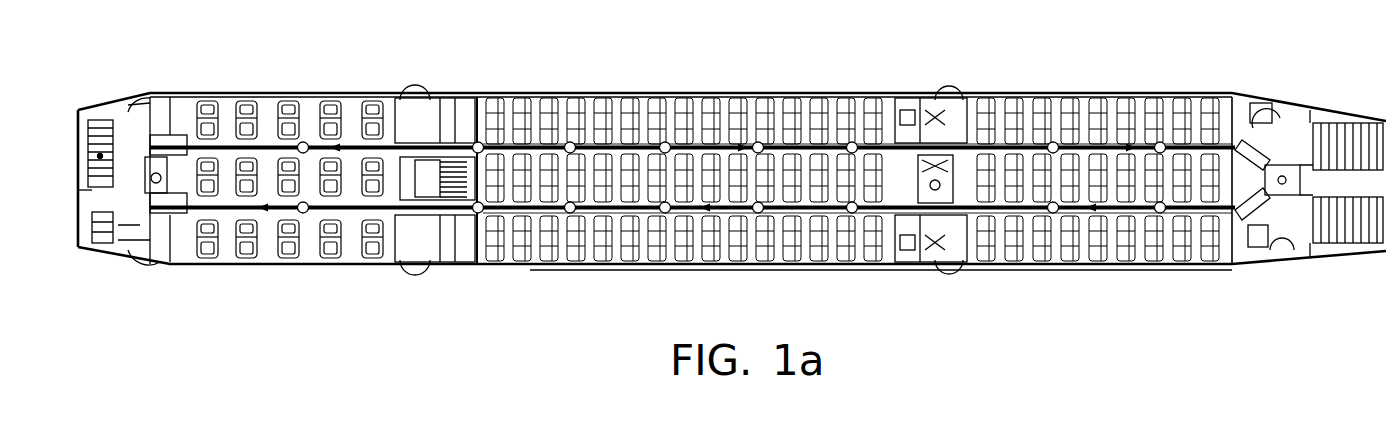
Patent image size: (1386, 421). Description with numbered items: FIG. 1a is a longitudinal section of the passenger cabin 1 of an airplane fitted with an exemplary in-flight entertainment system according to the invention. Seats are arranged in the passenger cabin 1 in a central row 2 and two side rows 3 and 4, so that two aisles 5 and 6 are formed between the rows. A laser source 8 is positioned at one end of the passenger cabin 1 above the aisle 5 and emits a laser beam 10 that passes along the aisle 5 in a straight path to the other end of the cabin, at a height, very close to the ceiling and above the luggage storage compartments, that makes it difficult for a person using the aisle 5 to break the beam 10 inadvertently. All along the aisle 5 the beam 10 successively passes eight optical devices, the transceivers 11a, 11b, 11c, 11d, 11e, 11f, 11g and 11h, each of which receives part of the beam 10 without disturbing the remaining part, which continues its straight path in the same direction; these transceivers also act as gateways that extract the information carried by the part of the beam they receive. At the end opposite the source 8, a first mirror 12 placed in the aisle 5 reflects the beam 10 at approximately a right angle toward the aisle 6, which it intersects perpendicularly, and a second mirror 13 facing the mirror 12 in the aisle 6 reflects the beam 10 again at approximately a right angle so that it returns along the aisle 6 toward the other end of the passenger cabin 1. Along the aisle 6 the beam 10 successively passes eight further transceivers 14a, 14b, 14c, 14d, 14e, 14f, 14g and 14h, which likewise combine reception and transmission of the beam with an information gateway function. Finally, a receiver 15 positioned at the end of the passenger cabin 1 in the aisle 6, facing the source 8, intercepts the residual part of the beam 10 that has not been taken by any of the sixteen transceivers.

The passenger cabin 1 is at (1200, 268).
The central row 2 is at (813, 192).
The side row 3 is at (815, 135).
The side row 4 is at (813, 251).
The aisle 5 is at (789, 152).
The aisle 6 is at (785, 212).
The laser source 8 is at (177, 140).
The laser beam 10 is at (630, 140).
The transceiver 11a is at (303, 142).
The transceiver 11b is at (478, 142).
The transceiver 11c is at (570, 142).
The transceiver 11d is at (665, 142).
The transceiver 11e is at (758, 142).
The transceiver 11f is at (852, 142).
The transceiver 11g is at (1053, 142).
The transceiver 11h is at (1160, 142).
The first mirror 12 is at (1258, 140).
The second mirror 13 is at (1263, 243).
The transceiver 14a is at (1160, 213).
The transceiver 14b is at (1053, 213).
The transceiver 14c is at (852, 213).
The transceiver 14d is at (758, 213).
The transceiver 14e is at (665, 213).
The transceiver 14f is at (570, 213).
The transceiver 14g is at (478, 213).
The transceiver 14h is at (303, 213).
The receiver 15 is at (173, 205).